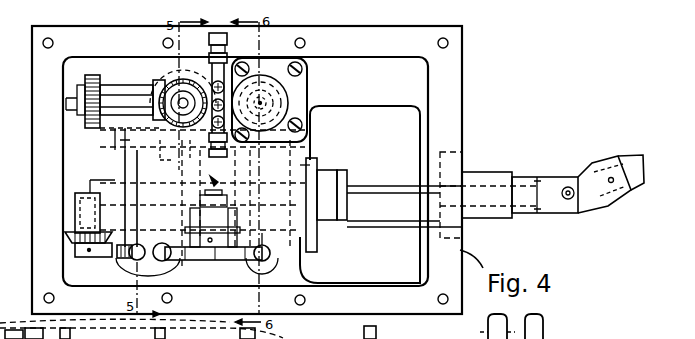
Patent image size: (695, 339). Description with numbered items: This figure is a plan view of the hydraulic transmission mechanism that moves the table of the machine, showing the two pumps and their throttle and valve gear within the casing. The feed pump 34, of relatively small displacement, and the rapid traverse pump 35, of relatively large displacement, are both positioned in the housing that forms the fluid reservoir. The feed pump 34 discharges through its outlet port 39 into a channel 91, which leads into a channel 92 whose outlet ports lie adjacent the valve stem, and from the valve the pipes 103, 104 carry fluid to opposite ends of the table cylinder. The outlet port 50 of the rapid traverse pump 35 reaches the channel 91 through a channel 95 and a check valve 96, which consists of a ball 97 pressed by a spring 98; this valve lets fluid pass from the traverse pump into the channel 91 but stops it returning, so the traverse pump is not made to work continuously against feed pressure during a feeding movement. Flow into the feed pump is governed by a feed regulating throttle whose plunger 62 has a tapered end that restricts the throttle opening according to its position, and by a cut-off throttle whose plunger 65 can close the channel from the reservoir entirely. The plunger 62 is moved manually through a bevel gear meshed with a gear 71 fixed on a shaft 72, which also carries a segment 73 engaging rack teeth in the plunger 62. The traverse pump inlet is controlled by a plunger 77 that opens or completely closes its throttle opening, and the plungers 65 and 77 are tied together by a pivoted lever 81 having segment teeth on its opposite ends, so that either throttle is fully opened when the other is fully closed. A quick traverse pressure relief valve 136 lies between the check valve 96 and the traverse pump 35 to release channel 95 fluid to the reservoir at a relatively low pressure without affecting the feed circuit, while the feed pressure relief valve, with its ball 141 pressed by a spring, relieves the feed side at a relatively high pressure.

The feed pump 34 is at (93, 184).
The rapid traverse pump 35 is at (306, 168).
The outlet port 39 is at (118, 148).
The outlet port 50 is at (311, 161).
The plunger 62 is at (135, 261).
The plunger 65 is at (168, 261).
The gear 71 is at (73, 243).
The shaft 72 is at (87, 257).
The segment 73 is at (117, 258).
The plunger 77 is at (263, 261).
The pivoted lever 81 is at (257, 260).
The channel 91 is at (127, 92).
The channel 92 is at (143, 96).
The channel 95 is at (192, 159).
The check valve 96 is at (78, 127).
The ball 97 is at (141, 198).
The spring 98 is at (78, 137).
The pipe 103 is at (225, 36).
The pipe 104 is at (222, 181).
The quick traverse pressure relief valve 136 is at (173, 154).
The ball 141 is at (118, 84).